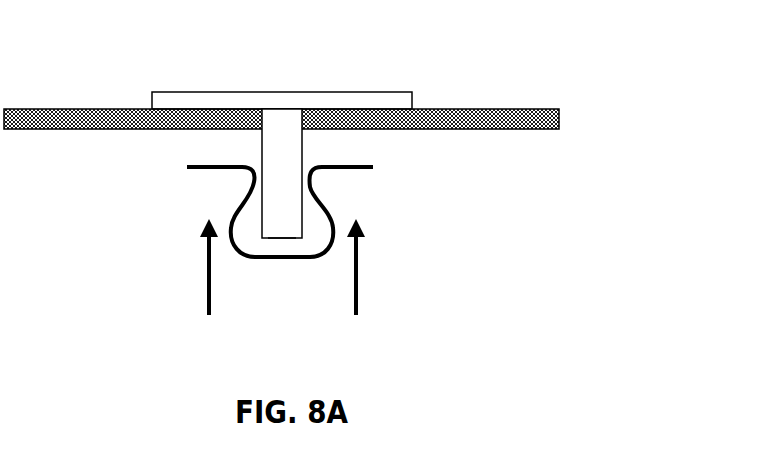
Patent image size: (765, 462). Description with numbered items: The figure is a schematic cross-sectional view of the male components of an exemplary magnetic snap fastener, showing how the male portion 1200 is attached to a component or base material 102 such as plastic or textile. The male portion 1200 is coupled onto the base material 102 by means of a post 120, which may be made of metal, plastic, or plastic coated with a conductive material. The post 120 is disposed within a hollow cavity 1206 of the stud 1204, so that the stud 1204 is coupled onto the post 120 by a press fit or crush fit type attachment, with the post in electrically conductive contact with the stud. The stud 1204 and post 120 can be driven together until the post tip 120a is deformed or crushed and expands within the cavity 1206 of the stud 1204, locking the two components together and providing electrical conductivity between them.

The component/base material 102 is at (560, 113).
The male portion 1200 is at (168, 92).
The post 120 is at (260, 145).
The post tip 120a is at (283, 240).
The stud 1204 is at (333, 181).
The hollow cavity 1206 is at (247, 222).